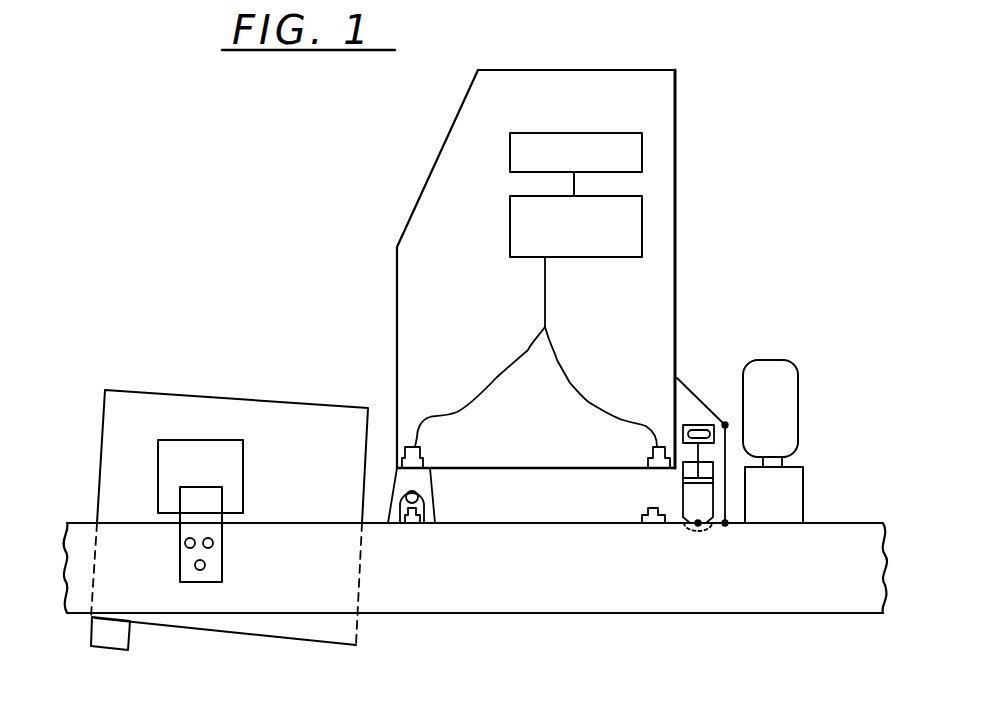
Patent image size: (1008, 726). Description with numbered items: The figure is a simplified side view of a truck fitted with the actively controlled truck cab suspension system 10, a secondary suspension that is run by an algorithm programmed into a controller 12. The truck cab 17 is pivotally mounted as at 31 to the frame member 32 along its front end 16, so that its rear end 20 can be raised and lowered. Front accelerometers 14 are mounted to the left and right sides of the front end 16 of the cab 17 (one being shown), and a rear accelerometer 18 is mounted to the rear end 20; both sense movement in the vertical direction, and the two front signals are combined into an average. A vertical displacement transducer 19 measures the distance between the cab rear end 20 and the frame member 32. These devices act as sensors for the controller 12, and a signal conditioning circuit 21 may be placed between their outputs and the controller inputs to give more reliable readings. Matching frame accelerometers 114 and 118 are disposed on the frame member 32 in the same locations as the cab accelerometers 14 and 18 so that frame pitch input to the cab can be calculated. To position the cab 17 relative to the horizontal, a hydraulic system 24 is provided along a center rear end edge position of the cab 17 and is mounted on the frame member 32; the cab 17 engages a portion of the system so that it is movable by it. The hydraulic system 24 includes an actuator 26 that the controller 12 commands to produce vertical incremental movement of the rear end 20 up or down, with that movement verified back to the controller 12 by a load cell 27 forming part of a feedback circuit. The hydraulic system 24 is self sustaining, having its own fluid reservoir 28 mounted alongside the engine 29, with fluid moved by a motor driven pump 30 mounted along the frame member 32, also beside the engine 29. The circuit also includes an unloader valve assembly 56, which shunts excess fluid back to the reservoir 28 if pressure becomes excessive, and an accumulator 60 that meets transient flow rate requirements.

The actively controlled truck cab suspension system 10 is at (733, 262).
The controller 12 is at (561, 167).
The front accelerometers 14 is at (420, 450).
The front end 16 is at (396, 442).
The truck cab 17 is at (413, 282).
The rear accelerometer 18 is at (657, 458).
The vertical displacement transducer 19 is at (728, 507).
The rear end 20 is at (653, 338).
The signal conditioning circuit 21 is at (627, 222).
The hydraulic system 24 is at (735, 374).
The actuator 26 is at (678, 521).
The load cell 27 is at (697, 417).
The fluid reservoir 28 is at (205, 448).
The engine 29 is at (293, 472).
The motor driven pump 30 is at (113, 642).
The pivotal mount 31 is at (420, 507).
The frame member 32 is at (437, 588).
The unloader valve assembly 56 is at (803, 477).
The accumulator 60 is at (787, 361).
The front accelerometers 114 is at (398, 520).
The rear accelerometer 118 is at (642, 516).